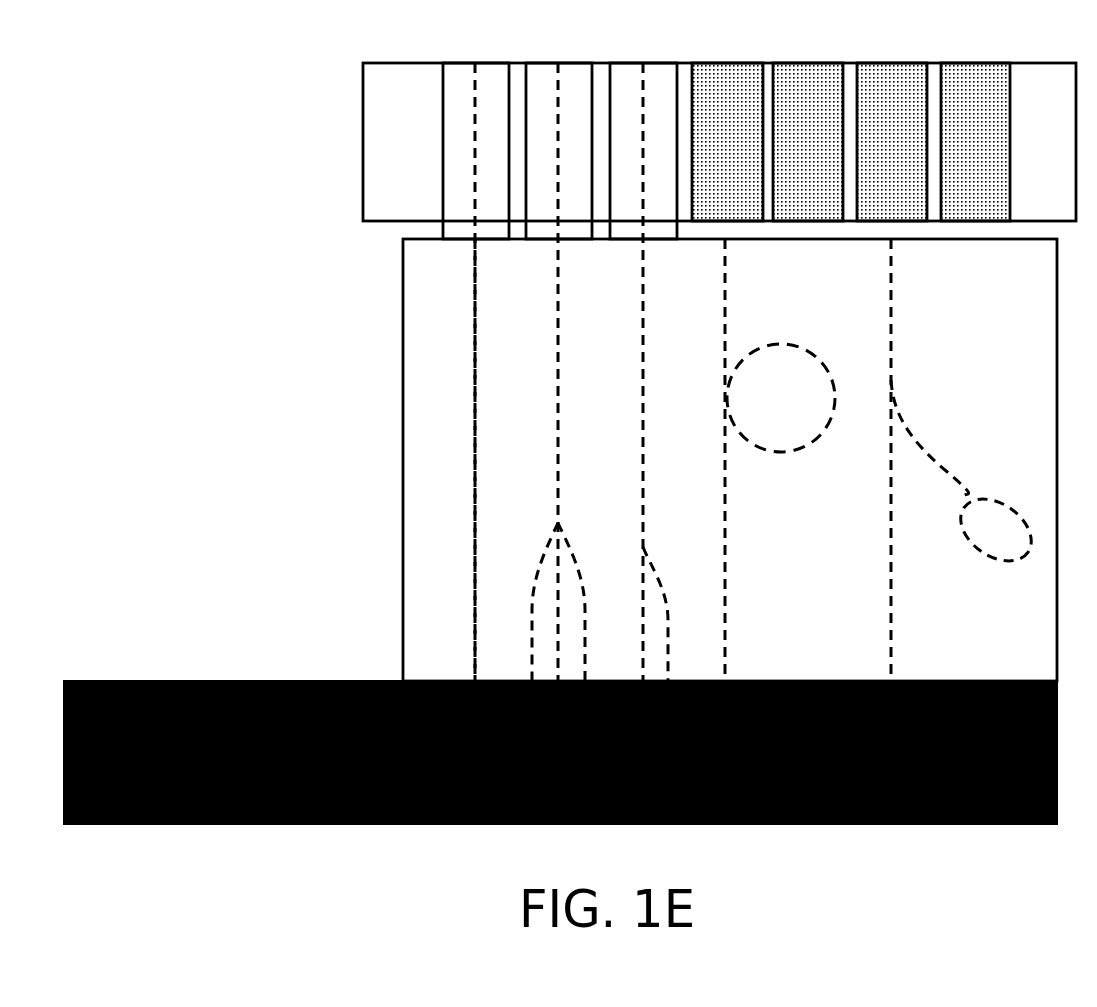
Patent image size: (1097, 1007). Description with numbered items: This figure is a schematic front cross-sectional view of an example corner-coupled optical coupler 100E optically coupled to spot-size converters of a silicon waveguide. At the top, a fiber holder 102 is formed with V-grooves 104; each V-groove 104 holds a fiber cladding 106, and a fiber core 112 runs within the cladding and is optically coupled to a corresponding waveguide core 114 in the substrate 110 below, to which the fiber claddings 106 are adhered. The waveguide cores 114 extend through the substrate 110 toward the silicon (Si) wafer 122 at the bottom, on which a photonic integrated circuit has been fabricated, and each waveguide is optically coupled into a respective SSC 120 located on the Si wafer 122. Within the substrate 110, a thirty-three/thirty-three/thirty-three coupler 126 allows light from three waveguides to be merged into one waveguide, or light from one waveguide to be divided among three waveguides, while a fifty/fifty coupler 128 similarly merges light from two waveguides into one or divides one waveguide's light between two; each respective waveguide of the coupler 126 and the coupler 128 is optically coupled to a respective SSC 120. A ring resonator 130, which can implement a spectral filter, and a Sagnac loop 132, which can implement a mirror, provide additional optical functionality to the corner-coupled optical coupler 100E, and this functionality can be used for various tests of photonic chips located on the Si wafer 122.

The corner-coupled optical coupler 100E is at (312, 407).
The fiber holder 102 is at (425, 162).
The V-groove 104 is at (972, 112).
The fiber cladding 106 is at (508, 75).
The substrate 110 is at (420, 474).
The fiber core 112 is at (558, 72).
The waveguide core 114 is at (475, 359).
The SSC 120 is at (212, 682).
The Si wafer 122 is at (82, 682).
The 33/33/33 coupler 126 is at (570, 516).
The 50/50 coupler 128 is at (655, 548).
The ring resonator 130 is at (743, 358).
The Sagnac loop 132 is at (990, 498).